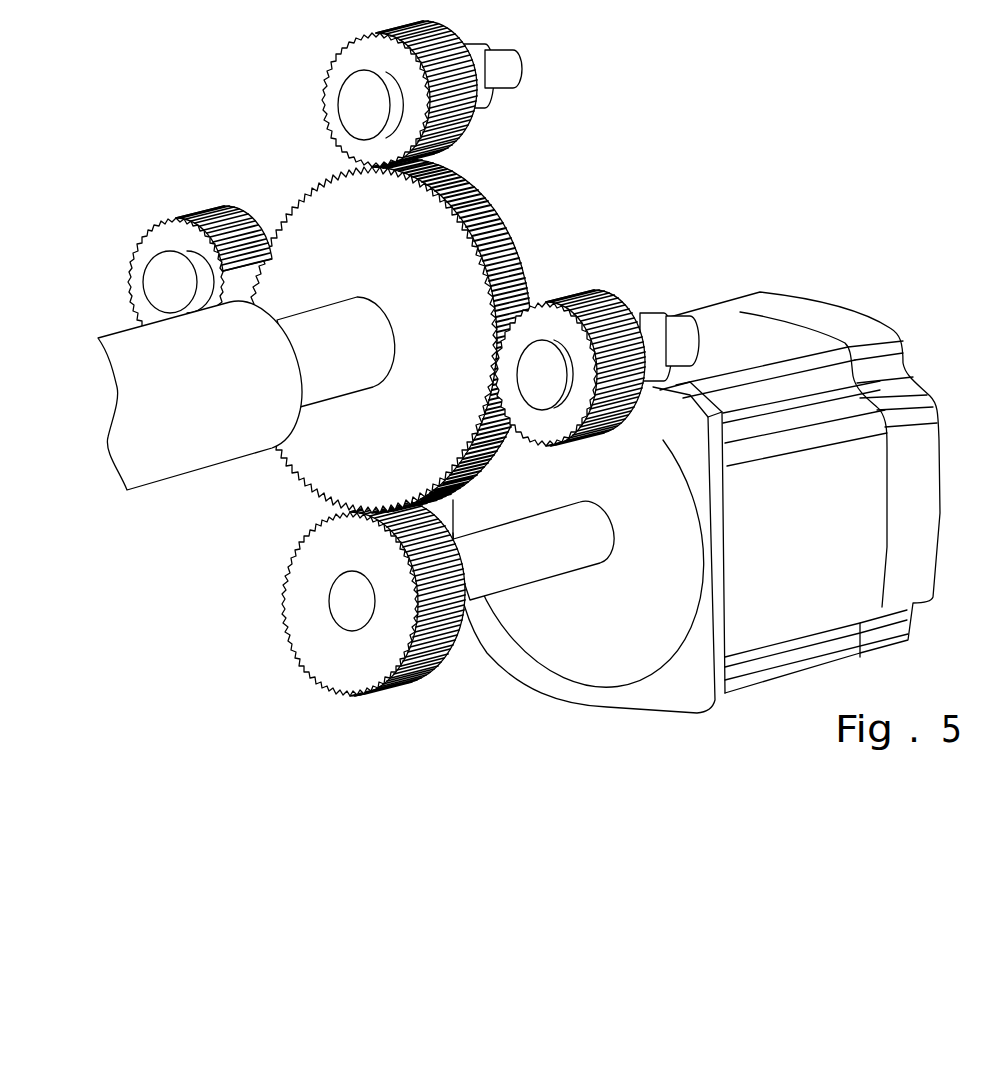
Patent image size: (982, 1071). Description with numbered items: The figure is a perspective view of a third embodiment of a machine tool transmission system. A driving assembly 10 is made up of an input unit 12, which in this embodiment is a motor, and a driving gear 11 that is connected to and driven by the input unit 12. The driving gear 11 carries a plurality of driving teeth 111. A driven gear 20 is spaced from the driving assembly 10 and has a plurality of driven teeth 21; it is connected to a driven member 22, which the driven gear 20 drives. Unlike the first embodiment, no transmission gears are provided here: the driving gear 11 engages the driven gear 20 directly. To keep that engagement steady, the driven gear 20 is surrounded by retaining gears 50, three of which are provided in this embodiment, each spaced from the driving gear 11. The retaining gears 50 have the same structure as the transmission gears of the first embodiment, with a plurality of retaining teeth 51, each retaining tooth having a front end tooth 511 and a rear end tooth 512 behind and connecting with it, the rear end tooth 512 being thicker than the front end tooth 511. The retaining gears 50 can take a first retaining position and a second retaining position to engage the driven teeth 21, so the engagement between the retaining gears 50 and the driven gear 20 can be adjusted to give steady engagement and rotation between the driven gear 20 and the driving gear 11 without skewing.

The driving assembly 10 is at (586, 530).
The driving gear 11 is at (351, 611).
The driving teeth 111 is at (404, 687).
The input unit 12 is at (553, 650).
The driven gear 20 is at (372, 325).
The driven teeth 21 is at (510, 257).
The driven member 22 is at (185, 457).
The retaining gears 50 is at (315, 65).
The retaining teeth 51 is at (500, 101).
The front end tooth 511 is at (465, 150).
The rear end tooth 512 is at (473, 123).